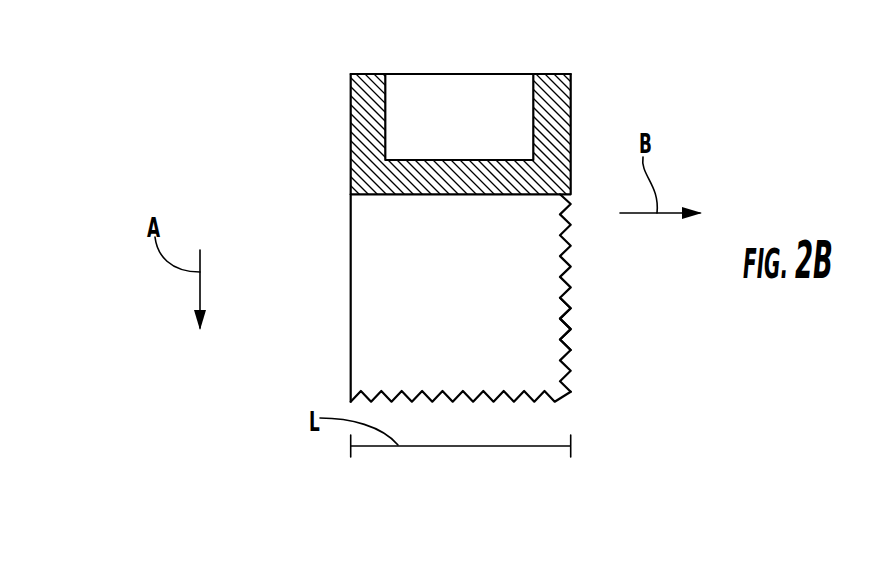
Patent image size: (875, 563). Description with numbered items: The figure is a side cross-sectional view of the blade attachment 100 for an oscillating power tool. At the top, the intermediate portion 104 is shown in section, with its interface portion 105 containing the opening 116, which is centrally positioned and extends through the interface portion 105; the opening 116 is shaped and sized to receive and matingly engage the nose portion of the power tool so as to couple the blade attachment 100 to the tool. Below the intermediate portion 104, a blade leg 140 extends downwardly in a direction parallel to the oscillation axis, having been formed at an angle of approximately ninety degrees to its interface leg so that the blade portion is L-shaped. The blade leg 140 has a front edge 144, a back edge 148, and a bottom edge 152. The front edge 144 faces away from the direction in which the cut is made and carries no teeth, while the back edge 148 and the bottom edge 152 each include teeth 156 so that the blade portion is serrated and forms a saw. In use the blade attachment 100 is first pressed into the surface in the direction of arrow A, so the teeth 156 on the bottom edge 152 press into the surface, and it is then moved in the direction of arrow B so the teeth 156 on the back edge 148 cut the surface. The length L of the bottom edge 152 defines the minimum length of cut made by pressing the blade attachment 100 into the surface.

The blade attachment 100 is at (444, 228).
The intermediate portion 104 is at (456, 97).
The interface portion 105 is at (553, 74).
The opening 116 is at (386, 122).
The blade leg 140 is at (475, 325).
The front edge 144 is at (351, 242).
The back edge 148 is at (629, 292).
The bottom edge 152 is at (472, 402).
The teeth 156 is at (560, 350).